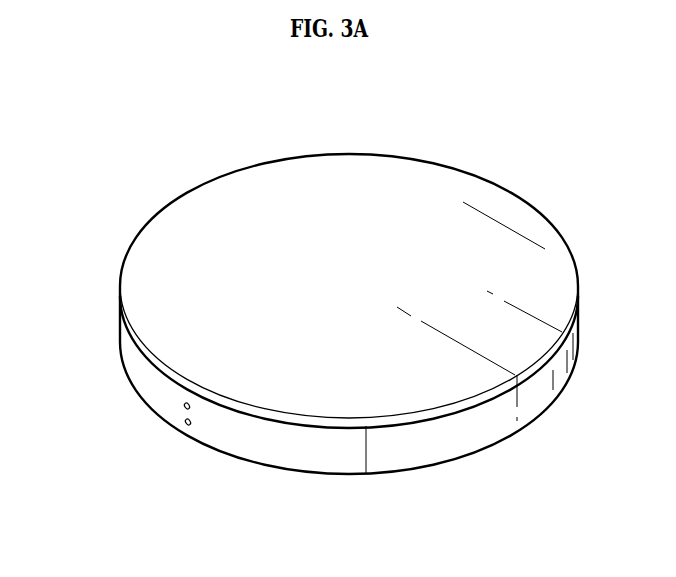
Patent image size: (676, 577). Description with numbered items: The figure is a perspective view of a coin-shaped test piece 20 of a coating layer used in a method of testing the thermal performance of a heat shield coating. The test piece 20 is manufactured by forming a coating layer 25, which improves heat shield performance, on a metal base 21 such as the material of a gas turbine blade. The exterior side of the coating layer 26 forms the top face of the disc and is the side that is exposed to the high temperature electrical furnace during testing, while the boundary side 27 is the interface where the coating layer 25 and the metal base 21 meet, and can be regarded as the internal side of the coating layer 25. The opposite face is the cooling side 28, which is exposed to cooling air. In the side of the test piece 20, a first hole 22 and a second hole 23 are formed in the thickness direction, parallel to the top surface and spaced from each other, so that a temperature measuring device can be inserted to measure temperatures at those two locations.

The test piece of a coating layer 20 is at (518, 158).
The metal base 21 is at (300, 448).
The first hole 22 is at (184, 407).
The second hole 23 is at (183, 428).
The coating layer 25 is at (138, 347).
The exterior side of the coating layer 26 is at (333, 187).
The boundary side 27 is at (243, 413).
The cooling side 28 is at (473, 453).